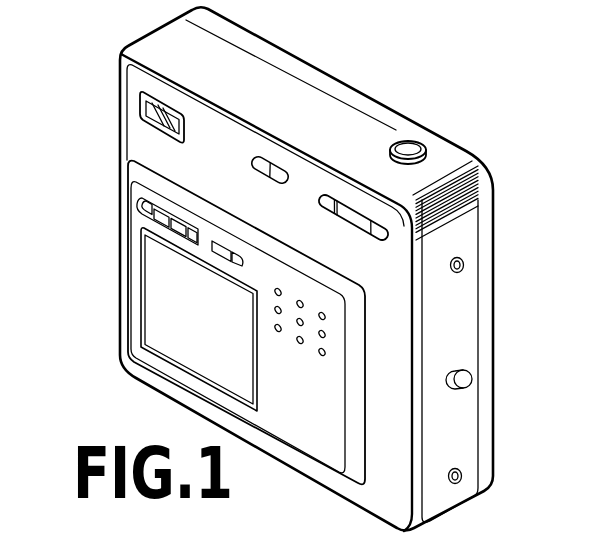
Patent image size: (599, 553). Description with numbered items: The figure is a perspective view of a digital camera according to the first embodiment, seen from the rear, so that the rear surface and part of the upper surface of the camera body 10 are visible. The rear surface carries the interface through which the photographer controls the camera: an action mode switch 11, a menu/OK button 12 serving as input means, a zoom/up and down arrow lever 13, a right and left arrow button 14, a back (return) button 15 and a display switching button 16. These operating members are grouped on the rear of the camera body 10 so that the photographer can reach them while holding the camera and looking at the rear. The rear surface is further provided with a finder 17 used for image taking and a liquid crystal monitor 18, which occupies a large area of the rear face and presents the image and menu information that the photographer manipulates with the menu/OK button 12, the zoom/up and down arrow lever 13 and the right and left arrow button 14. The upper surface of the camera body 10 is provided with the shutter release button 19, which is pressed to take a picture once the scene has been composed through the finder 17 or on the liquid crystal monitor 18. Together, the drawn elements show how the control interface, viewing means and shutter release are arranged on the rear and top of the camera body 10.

The camera body 10 is at (320, 0).
The action mode switch 11 is at (218, 258).
The menu/OK button 12 is at (173, 232).
The zoom/up and down arrow lever 13 is at (357, 198).
The right and left arrow button 14 is at (323, 196).
The back (return) button 15 is at (144, 229).
The display switching button 16 is at (143, 208).
The finder 17 is at (140, 103).
The liquid crystal monitor 18 is at (165, 328).
The shutter release button 19 is at (411, 146).